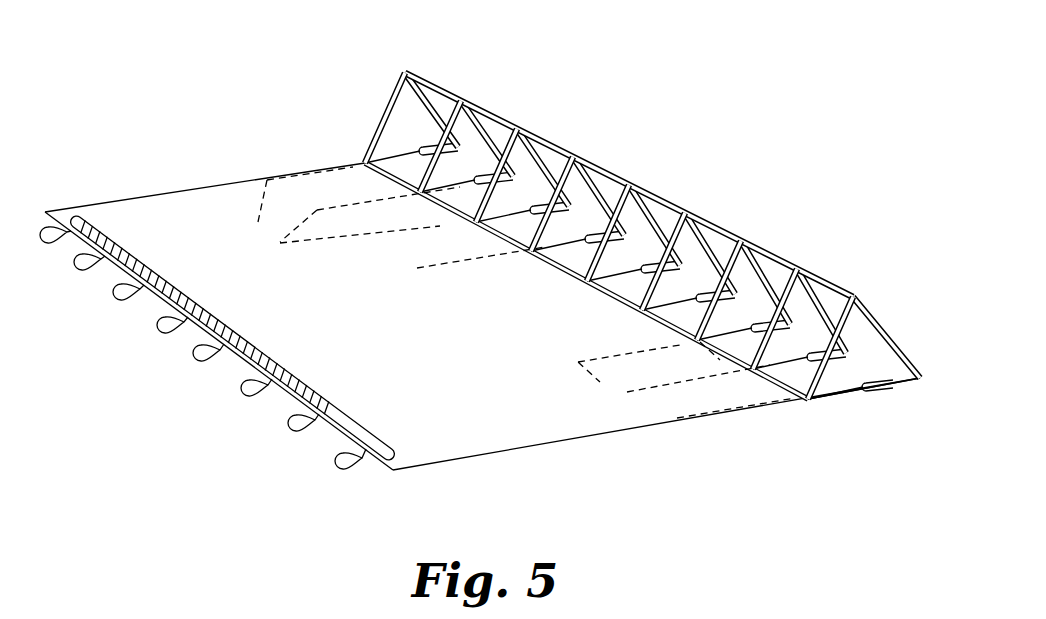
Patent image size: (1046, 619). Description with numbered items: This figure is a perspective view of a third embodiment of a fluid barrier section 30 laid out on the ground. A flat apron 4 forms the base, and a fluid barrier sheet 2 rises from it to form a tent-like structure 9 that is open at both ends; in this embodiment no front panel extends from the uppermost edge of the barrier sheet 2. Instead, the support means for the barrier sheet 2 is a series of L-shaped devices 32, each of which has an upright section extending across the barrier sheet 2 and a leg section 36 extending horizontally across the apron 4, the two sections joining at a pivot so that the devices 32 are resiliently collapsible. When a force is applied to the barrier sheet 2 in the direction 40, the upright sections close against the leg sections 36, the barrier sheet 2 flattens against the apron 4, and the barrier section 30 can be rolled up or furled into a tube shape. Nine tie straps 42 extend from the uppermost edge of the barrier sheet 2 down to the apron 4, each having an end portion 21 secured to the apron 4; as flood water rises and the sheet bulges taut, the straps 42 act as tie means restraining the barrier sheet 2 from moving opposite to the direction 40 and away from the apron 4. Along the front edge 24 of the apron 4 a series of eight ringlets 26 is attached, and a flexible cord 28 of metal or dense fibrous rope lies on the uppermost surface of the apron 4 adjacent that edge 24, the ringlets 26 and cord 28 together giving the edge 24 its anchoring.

The fluid barrier sheet 2 is at (648, 226).
The apron 4 is at (470, 432).
The tent-like structure 9 is at (754, 228).
The end portion 21 is at (367, 244).
The front edge 24 is at (245, 362).
The ringlets 26 is at (170, 328).
The flexible cord 28 is at (100, 220).
The fluid barrier section 30 is at (611, 240).
The L-shaped devices 32 is at (472, 122).
The leg section 36 is at (873, 396).
The direction 40 is at (372, 68).
The tie straps 42 is at (378, 130).